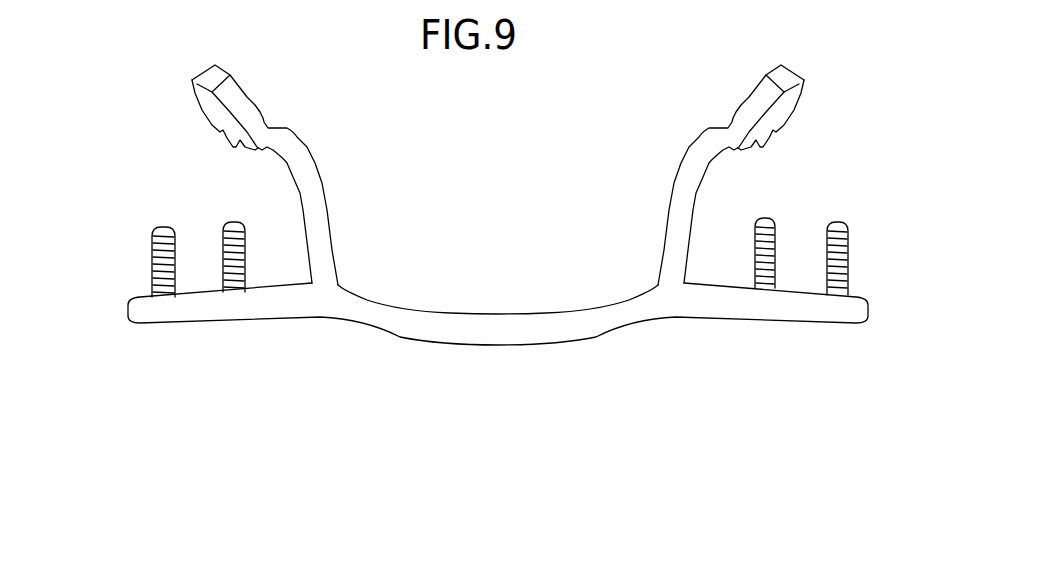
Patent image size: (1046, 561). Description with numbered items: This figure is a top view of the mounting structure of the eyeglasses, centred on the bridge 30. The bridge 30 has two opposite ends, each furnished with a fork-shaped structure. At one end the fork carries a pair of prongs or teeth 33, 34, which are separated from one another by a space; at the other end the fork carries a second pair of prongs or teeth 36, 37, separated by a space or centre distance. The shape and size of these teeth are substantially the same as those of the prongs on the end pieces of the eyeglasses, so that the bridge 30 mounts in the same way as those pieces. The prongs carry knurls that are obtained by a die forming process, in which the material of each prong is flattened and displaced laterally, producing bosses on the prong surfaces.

The bridge 30 is at (490, 363).
The prong or tooth 33 is at (150, 233).
The prong or tooth 34 is at (222, 230).
The prong or tooth 36 is at (849, 233).
The prong or tooth 37 is at (777, 227).